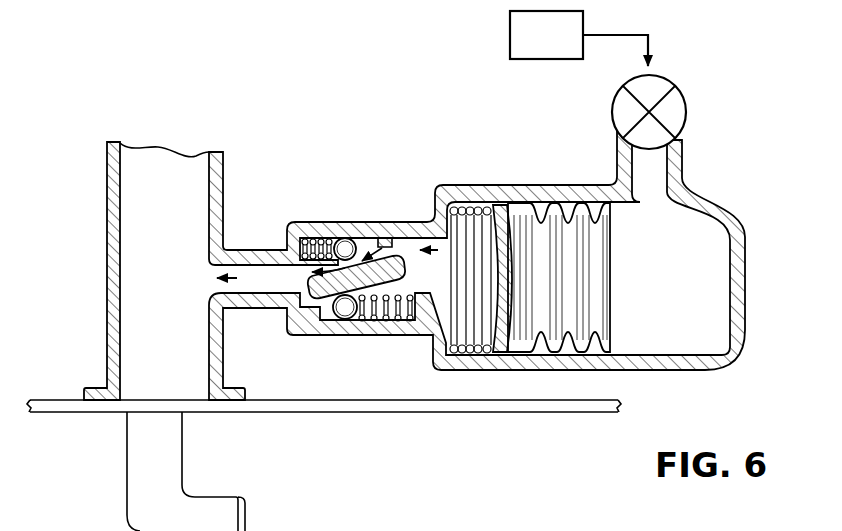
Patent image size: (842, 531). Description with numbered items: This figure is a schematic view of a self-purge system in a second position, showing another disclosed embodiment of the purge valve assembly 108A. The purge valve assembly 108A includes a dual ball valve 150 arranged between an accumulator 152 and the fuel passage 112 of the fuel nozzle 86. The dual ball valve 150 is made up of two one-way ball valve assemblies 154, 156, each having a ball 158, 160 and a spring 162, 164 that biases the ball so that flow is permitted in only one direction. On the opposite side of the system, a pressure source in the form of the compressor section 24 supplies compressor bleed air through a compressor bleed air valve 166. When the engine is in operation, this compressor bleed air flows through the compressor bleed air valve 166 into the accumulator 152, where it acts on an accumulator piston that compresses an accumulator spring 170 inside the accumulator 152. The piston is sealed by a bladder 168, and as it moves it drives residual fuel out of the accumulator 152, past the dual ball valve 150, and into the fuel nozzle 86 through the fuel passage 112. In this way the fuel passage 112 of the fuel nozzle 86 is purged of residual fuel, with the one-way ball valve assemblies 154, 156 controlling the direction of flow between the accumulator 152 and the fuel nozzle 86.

The compressor section 24 is at (510, 40).
The fuel nozzle 86 is at (78, 152).
The purge valve assembly 108A is at (344, 206).
The fuel passage 112 is at (135, 226).
The dual ball valve 150 is at (380, 231).
The accumulator 152 is at (541, 354).
The one-way ball valve assembly 154 is at (286, 220).
The one-way ball valve assembly 156 is at (341, 351).
The ball 158 is at (346, 240).
The ball 160 is at (344, 316).
The spring 162 is at (303, 236).
The spring 164 is at (406, 328).
The compressor bleed air valve 166 is at (686, 101).
The bladder 168 is at (622, 338).
The accumulator spring 170 is at (498, 346).